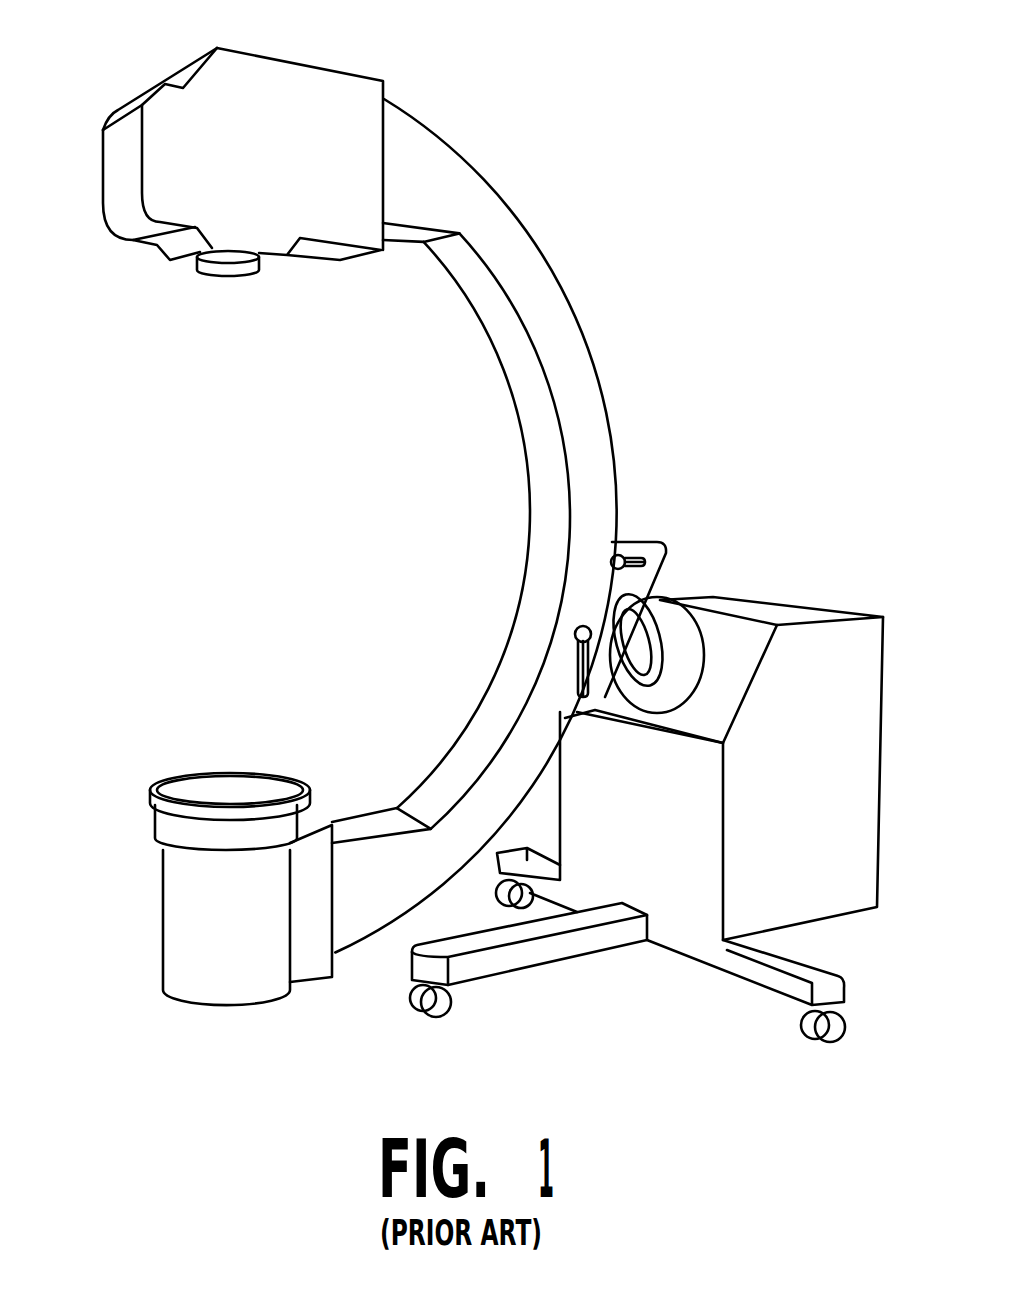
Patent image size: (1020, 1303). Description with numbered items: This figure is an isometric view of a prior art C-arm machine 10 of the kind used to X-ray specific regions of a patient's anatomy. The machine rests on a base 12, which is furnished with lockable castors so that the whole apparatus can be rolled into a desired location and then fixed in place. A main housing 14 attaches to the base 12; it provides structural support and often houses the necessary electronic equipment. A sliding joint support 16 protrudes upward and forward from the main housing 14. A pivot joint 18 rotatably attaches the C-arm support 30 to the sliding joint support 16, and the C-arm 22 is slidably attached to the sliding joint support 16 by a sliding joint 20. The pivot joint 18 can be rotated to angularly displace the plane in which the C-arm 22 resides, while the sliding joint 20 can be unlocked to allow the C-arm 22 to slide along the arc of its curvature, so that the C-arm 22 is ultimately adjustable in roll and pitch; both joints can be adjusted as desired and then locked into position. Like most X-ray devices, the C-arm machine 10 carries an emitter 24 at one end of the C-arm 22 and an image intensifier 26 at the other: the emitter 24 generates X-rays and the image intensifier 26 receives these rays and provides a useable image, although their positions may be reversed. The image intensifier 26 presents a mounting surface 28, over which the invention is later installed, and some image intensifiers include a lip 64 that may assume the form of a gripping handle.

The C-arm machine 10 is at (332, 1087).
The base 12 is at (560, 963).
The main housing 14 is at (745, 621).
The sliding joint support 16 is at (657, 673).
The pivot joint 18 is at (660, 602).
The sliding joint 20 is at (607, 585).
The C-arm 22 is at (560, 283).
The emitter 24 is at (290, 110).
The image intensifier 26 is at (200, 940).
The mounting surface 28 is at (238, 785).
The C-arm support 30 is at (650, 590).
The lip 64 is at (150, 800).